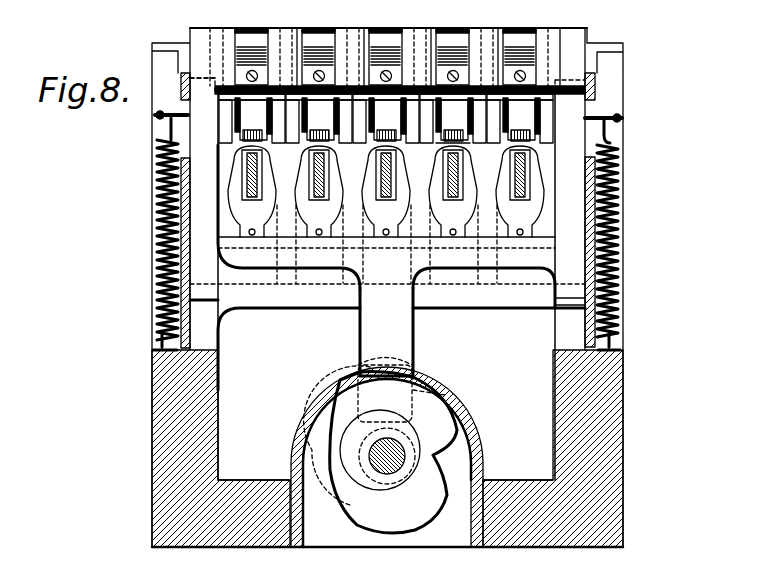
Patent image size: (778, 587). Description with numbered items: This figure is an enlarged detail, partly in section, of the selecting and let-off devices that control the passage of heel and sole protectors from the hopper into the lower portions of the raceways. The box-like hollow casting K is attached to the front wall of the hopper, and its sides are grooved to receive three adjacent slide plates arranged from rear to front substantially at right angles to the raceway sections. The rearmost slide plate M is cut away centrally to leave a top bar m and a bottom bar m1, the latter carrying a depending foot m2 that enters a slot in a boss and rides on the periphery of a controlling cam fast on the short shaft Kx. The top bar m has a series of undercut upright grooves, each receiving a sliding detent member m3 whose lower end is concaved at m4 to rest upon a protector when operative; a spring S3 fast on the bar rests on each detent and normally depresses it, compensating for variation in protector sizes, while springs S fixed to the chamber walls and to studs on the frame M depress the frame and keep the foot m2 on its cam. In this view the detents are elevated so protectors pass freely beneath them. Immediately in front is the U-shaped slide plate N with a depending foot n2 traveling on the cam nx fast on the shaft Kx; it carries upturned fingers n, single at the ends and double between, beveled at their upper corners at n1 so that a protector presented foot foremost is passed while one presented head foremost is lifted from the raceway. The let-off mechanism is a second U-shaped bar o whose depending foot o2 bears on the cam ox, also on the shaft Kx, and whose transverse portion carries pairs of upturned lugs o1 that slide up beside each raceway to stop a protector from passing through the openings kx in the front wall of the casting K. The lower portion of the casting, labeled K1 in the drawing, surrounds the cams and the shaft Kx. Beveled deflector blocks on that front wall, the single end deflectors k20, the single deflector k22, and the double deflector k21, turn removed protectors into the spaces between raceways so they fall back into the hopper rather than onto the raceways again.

The slide plate M is at (195, 258).
The springs S is at (157, 225).
The top bar m is at (568, 38).
The spring S3 is at (245, 30).
The end deflector k20 is at (362, 16).
The sliding detent member m3 is at (253, 128).
The concaved lower end of detent m4 is at (440, 133).
The openings in front wall of casting kx is at (268, 147).
The deflector k22 is at (332, 161).
The double deflector k21 is at (438, 165).
The upturned fingers n is at (218, 197).
The upturned lugs o1 is at (247, 168).
The beveled upper corners of fingers n1 is at (561, 170).
The U-shaped bar o is at (300, 283).
The bottom bar m1 is at (493, 269).
The slide plate N is at (250, 308).
The depending foot m2 is at (410, 346).
The casting K is at (612, 447).
The cam housing arch K1 is at (481, 431).
The short shaft Kx is at (387, 473).
The cam nx is at (422, 528).
The cam ox is at (447, 441).
The depending foot n2 is at (327, 386).
The depending foot o2 is at (363, 342).